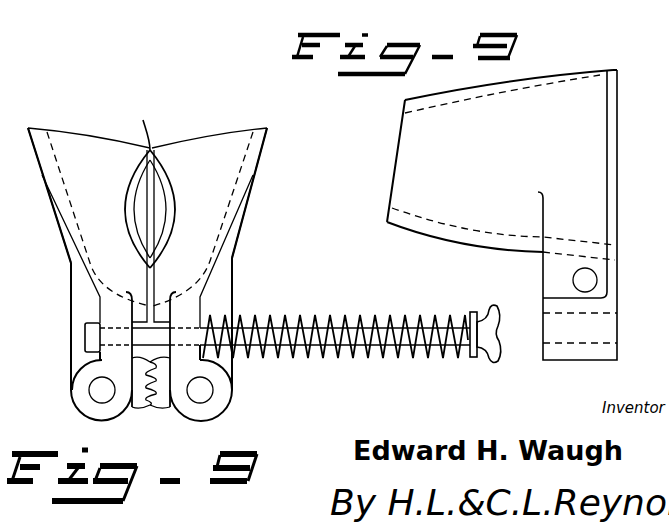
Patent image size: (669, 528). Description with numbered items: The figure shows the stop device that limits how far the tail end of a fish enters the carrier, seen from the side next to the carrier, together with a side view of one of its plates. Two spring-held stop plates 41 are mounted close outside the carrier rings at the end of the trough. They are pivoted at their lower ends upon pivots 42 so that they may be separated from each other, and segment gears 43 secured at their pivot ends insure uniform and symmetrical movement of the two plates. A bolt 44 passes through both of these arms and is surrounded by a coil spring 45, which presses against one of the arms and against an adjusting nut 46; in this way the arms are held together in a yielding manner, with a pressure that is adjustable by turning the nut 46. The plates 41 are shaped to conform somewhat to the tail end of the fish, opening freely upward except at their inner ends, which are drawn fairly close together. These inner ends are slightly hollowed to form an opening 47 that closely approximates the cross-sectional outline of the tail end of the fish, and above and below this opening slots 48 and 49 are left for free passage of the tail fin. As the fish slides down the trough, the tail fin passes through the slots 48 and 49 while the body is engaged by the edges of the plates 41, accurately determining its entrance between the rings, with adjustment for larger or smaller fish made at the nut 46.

In FIG. 8, the stop plates 41 is at (147, 228).
In FIG. 9, the stop plates 41 is at (502, 215).
In FIG. 8, the pivots 42 is at (97, 390).
In FIG. 8, the segment gears 43 is at (150, 407).
In FIG. 8, the bolt 44 is at (287, 330).
In FIG. 8, the coil spring 45 is at (350, 313).
In FIG. 8, the adjusting nut 46 is at (473, 312).
In FIG. 8, the opening 47 is at (150, 236).
In FIG. 8, the slot 48 is at (153, 291).
In FIG. 8, the slot 49 is at (146, 124).